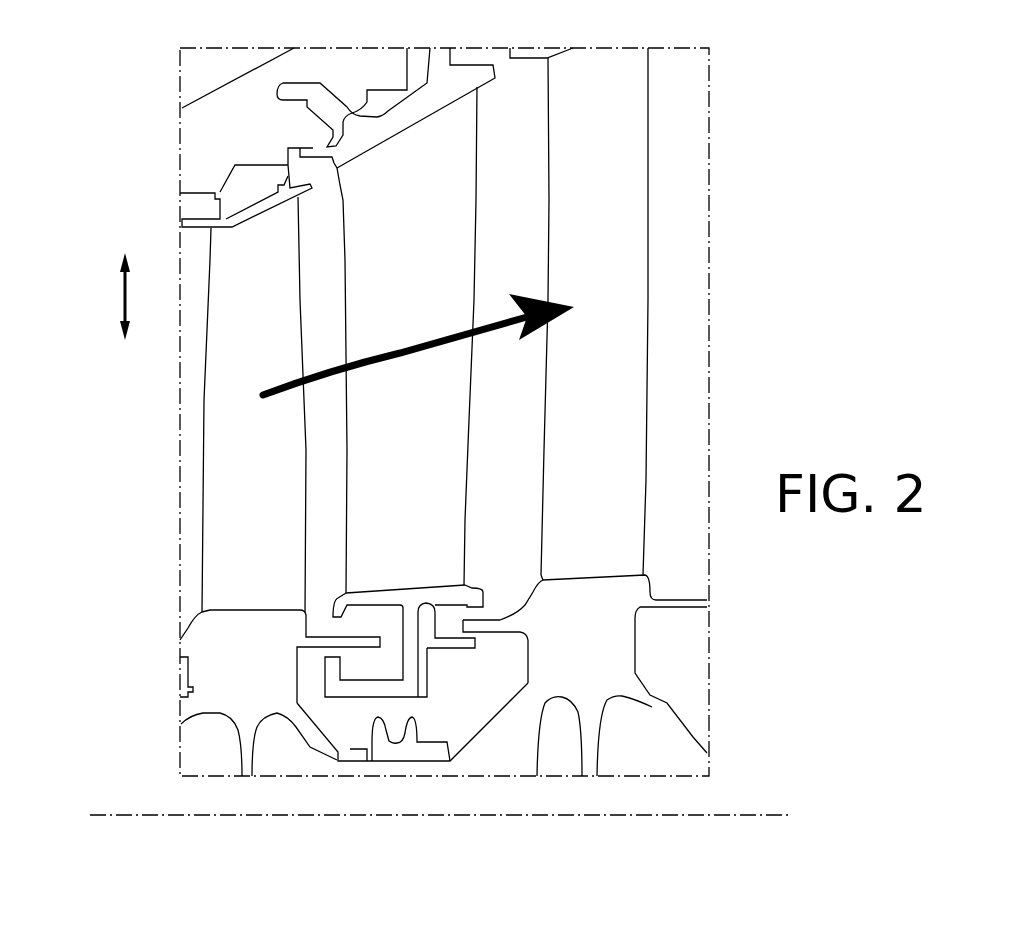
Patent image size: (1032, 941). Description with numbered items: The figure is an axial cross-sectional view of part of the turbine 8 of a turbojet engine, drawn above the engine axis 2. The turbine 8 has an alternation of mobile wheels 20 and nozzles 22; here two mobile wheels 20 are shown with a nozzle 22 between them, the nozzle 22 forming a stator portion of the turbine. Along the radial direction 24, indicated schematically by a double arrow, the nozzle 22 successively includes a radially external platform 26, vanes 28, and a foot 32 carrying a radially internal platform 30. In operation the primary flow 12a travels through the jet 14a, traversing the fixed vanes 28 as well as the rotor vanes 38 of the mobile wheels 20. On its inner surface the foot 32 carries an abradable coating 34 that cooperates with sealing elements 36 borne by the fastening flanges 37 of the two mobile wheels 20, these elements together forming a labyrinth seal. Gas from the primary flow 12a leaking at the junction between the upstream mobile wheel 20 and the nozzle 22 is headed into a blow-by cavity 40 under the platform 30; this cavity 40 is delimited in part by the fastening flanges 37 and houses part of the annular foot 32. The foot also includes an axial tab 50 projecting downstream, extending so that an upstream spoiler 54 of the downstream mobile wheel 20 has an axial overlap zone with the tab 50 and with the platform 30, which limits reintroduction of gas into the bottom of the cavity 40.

The engine centerline axis 2 is at (767, 815).
The turbine 8 is at (721, 120).
The primary flow 12a is at (420, 337).
The jet 14a is at (560, 340).
The mobile wheel 20 is at (423, 400).
The nozzle 22 is at (382, 80).
The radial direction 24 is at (124, 297).
The radially external platform 26 is at (463, 78).
The vanes 28 is at (444, 242).
The radially internal platform 30 is at (408, 606).
The foot 32 is at (463, 675).
The abradable coating 34 is at (427, 717).
The sealing elements 36 is at (377, 728).
The fastening flanges 37 is at (308, 728).
The rotor vanes 38 is at (228, 375).
The blow-by cavity 40 is at (528, 708).
The axial tab 50 is at (447, 644).
The upstream spoiler 54 is at (495, 624).